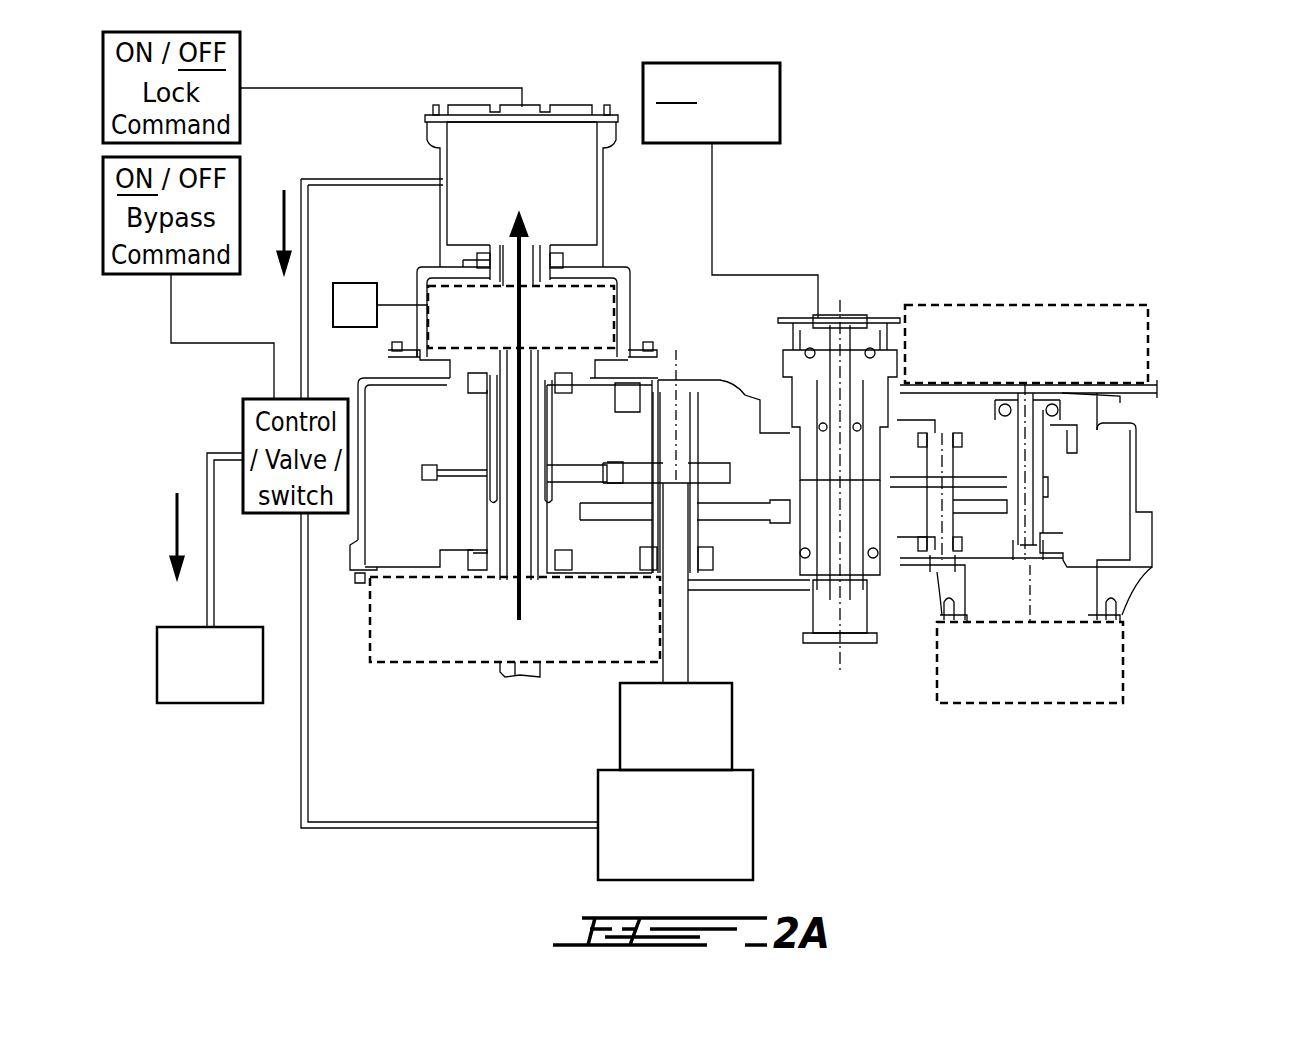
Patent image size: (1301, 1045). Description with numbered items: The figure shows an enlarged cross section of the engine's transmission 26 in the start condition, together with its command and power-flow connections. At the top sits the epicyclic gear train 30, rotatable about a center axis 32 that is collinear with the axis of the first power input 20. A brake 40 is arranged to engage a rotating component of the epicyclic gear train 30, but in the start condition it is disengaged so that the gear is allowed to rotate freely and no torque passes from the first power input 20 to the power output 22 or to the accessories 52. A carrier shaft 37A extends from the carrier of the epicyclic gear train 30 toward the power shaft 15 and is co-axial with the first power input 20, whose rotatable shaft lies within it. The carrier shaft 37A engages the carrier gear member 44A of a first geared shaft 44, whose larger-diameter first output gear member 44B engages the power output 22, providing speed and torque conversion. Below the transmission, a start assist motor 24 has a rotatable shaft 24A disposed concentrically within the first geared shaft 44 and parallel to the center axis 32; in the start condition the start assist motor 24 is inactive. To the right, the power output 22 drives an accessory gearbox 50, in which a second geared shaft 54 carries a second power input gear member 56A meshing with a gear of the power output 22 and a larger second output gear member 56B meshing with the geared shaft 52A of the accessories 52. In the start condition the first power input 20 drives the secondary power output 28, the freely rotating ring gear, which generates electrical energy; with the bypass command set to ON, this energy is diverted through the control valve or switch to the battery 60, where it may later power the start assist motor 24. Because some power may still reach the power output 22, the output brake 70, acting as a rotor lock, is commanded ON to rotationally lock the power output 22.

The power shaft 15 is at (532, 677).
The first power input 20 is at (460, 670).
The power output 22 is at (853, 335).
The start assist motor 24 is at (753, 825).
The rotatable shaft 24A is at (680, 665).
The transmission 26 is at (746, 440).
The secondary power output 28 is at (548, 160).
The epicyclic gear train 30 is at (614, 300).
The center axis 32 is at (555, 258).
The carrier shaft 37A is at (490, 512).
The brake 40 is at (370, 318).
The first geared shaft 44 is at (668, 438).
The carrier gear member 44A is at (715, 470).
The first output gear member 44B is at (745, 520).
The accessory gearbox 50 is at (1137, 448).
The accessories 52 is at (1098, 305).
The geared shaft 52A is at (1043, 517).
The second geared shaft 54 is at (937, 572).
The second power input gear member 56A is at (985, 512).
The second output gear member 56B is at (987, 467).
The battery 60 is at (222, 680).
The output brake 70 is at (780, 103).